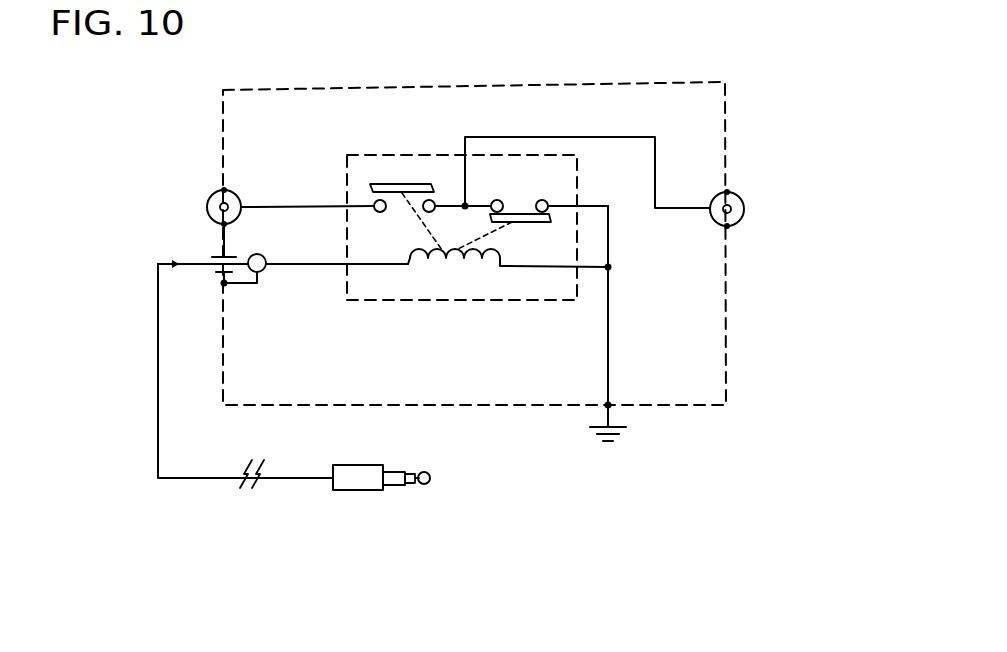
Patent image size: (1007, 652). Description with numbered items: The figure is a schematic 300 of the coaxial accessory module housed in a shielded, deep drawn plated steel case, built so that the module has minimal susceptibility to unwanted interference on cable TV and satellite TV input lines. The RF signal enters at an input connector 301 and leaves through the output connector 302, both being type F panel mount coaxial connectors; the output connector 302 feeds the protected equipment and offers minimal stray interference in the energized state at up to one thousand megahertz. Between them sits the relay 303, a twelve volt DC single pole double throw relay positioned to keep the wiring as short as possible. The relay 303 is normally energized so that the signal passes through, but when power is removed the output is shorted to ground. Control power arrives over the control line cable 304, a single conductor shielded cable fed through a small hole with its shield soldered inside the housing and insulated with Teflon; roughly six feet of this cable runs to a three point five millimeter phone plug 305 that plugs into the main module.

The schematic 300 is at (435, 86).
The RF input connector 301 is at (223, 188).
The output connector 302 is at (727, 192).
The relay 303 is at (345, 290).
The control line cable 304 is at (210, 478).
The phone plug 305 is at (340, 490).